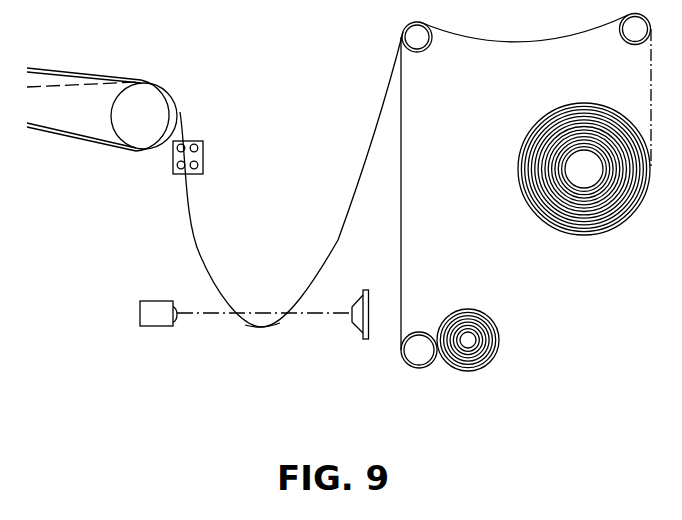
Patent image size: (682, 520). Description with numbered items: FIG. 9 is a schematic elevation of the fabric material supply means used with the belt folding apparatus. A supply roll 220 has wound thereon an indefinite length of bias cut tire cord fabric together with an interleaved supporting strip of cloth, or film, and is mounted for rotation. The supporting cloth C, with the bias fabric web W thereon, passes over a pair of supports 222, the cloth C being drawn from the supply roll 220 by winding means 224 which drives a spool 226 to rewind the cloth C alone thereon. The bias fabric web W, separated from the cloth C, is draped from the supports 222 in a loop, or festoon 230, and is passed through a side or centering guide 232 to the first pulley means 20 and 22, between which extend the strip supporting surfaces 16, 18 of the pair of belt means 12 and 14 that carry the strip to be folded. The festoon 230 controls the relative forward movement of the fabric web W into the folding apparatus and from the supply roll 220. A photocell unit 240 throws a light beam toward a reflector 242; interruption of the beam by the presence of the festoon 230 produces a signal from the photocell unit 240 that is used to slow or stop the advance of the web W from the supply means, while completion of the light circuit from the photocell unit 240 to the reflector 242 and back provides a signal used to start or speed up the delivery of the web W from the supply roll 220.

The strip supporting surface 18 is at (84, 61).
The strip supporting surface 16 is at (60, 69).
The belt means 14 is at (98, 115).
The belt means 12 is at (91, 139).
The pulley means 22 is at (177, 116).
The pulley means 20 is at (170, 104).
The centering guide 232 is at (203, 159).
The bias fabric web W is at (358, 190).
The supporting cloth C is at (401, 212).
The festoon 230 is at (264, 328).
The photocell unit 240 is at (150, 327).
The reflector 242 is at (358, 335).
The supports 222 is at (424, 50).
The supply roll 220 is at (522, 152).
The winding means 224 is at (420, 332).
The spool 226 is at (499, 333).